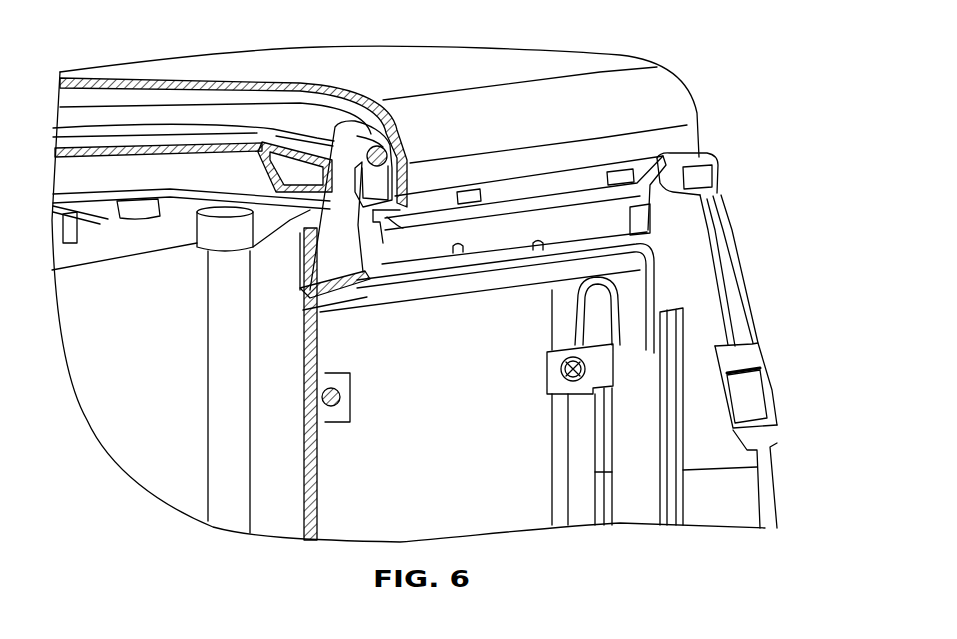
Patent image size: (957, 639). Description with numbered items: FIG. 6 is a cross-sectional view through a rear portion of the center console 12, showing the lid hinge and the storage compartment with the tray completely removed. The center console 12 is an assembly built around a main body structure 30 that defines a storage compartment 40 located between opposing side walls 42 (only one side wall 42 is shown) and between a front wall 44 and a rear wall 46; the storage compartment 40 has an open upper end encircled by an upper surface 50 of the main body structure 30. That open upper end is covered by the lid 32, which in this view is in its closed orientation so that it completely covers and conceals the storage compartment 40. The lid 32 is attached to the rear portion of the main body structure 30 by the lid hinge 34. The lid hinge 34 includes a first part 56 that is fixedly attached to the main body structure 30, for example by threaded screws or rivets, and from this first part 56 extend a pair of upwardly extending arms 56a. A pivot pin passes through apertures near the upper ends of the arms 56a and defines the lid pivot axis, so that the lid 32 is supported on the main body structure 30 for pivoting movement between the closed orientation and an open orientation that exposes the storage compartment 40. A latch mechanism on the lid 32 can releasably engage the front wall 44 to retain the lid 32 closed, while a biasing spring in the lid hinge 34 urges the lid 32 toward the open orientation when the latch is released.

The center console 12 is at (618, 30).
The lid 32 is at (489, 65).
The lid hinge 34 is at (330, 134).
The upper surface 50 is at (170, 190).
The first part 56 is at (498, 247).
The arms 56a is at (570, 230).
The main body structure 30 is at (742, 262).
The storage compartment 40 is at (125, 405).
The front wall 44 is at (153, 463).
The side walls 42 is at (285, 500).
The rear wall 46 is at (303, 436).